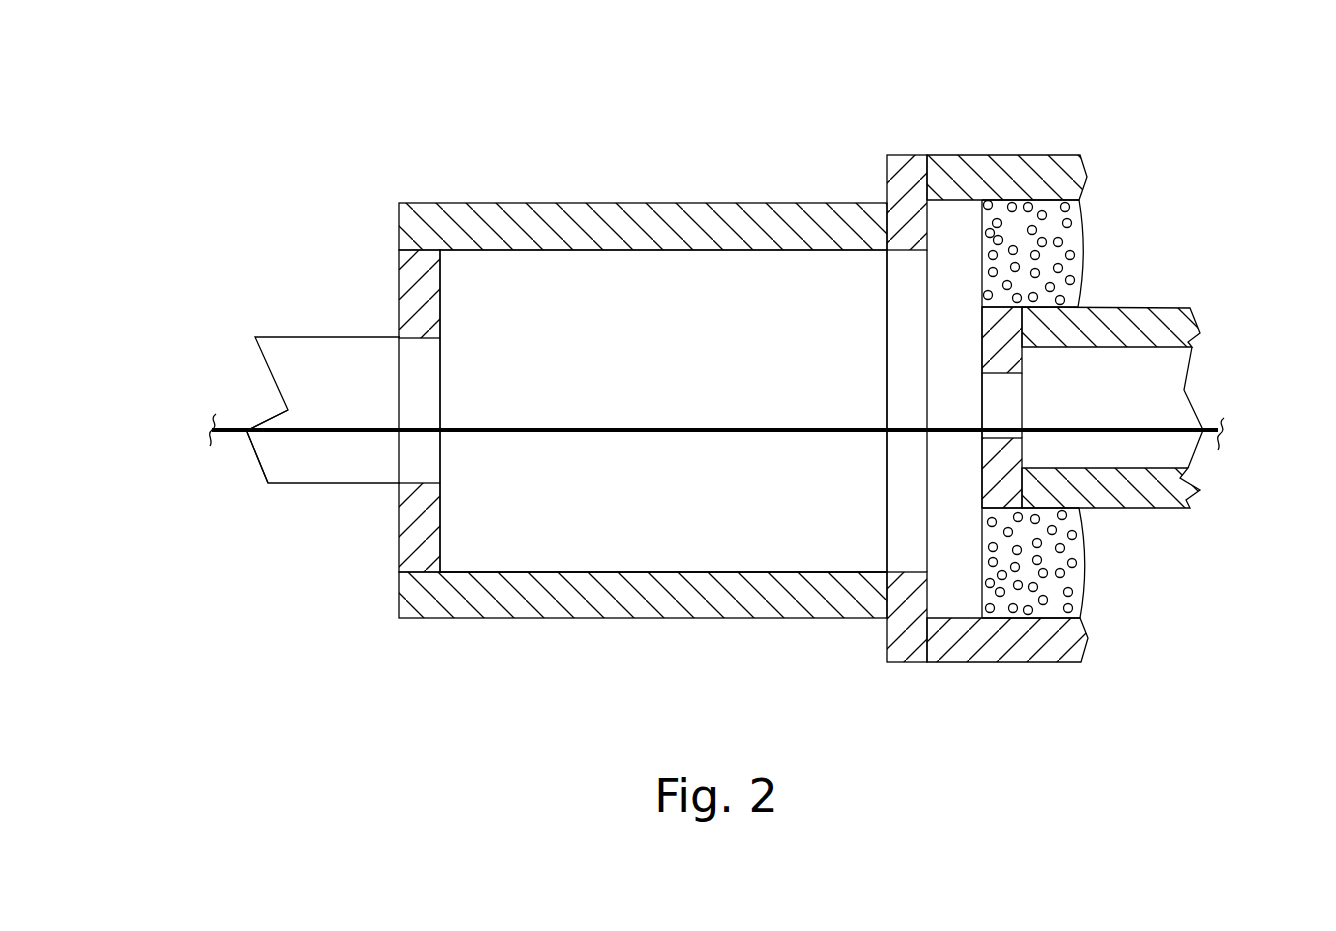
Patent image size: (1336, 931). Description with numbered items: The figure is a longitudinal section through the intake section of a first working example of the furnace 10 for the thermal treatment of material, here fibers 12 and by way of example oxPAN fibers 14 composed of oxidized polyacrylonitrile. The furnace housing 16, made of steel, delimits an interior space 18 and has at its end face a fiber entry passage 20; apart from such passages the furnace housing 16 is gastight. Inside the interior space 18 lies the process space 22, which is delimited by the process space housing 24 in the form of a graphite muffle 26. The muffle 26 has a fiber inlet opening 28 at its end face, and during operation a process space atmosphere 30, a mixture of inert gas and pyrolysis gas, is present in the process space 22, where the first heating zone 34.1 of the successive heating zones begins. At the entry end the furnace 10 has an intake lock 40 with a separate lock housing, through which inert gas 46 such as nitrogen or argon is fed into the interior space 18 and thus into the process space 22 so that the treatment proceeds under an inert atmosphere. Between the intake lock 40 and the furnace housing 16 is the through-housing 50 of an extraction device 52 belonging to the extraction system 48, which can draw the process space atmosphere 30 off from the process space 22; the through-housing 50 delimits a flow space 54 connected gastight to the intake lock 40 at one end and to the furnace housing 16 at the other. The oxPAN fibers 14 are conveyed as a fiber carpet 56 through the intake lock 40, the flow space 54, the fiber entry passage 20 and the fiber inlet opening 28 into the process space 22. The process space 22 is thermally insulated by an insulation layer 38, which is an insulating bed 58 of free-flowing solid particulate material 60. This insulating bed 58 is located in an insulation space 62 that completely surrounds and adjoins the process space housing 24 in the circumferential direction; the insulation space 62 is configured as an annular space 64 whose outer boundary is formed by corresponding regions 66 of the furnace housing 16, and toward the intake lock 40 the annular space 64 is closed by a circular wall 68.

The furnace 10 is at (352, 122).
The fibers 12 is at (231, 428).
The oxPAN fibers 14 is at (238, 435).
The furnace housing 16 is at (1015, 168).
The interior space 18 is at (961, 230).
The fiber entry passage 20 is at (906, 250).
The process space 22 is at (1162, 381).
The process space housing 24 is at (1170, 325).
The muffle 26 is at (1172, 490).
The fiber inlet opening 28 is at (1000, 378).
The process space atmosphere 30 is at (1165, 412).
The heating zone 34.1 is at (1110, 126).
The insulation layer 38 is at (1084, 228).
The intake lock 40 is at (292, 348).
The inert gas 46 is at (350, 362).
The extraction system 48 is at (622, 308).
The through-housing 50 is at (577, 602).
The extraction device 52 is at (498, 620).
The flow space 54 is at (672, 540).
The fiber carpet 56 is at (314, 435).
The insulating bed 58 is at (1077, 595).
The solid particulate material 60 is at (1031, 590).
The insulation space 62 is at (1038, 203).
The annular space 64 is at (1060, 283).
The regions of the furnace housing 66 is at (1018, 208).
The circular wall 68 is at (982, 573).